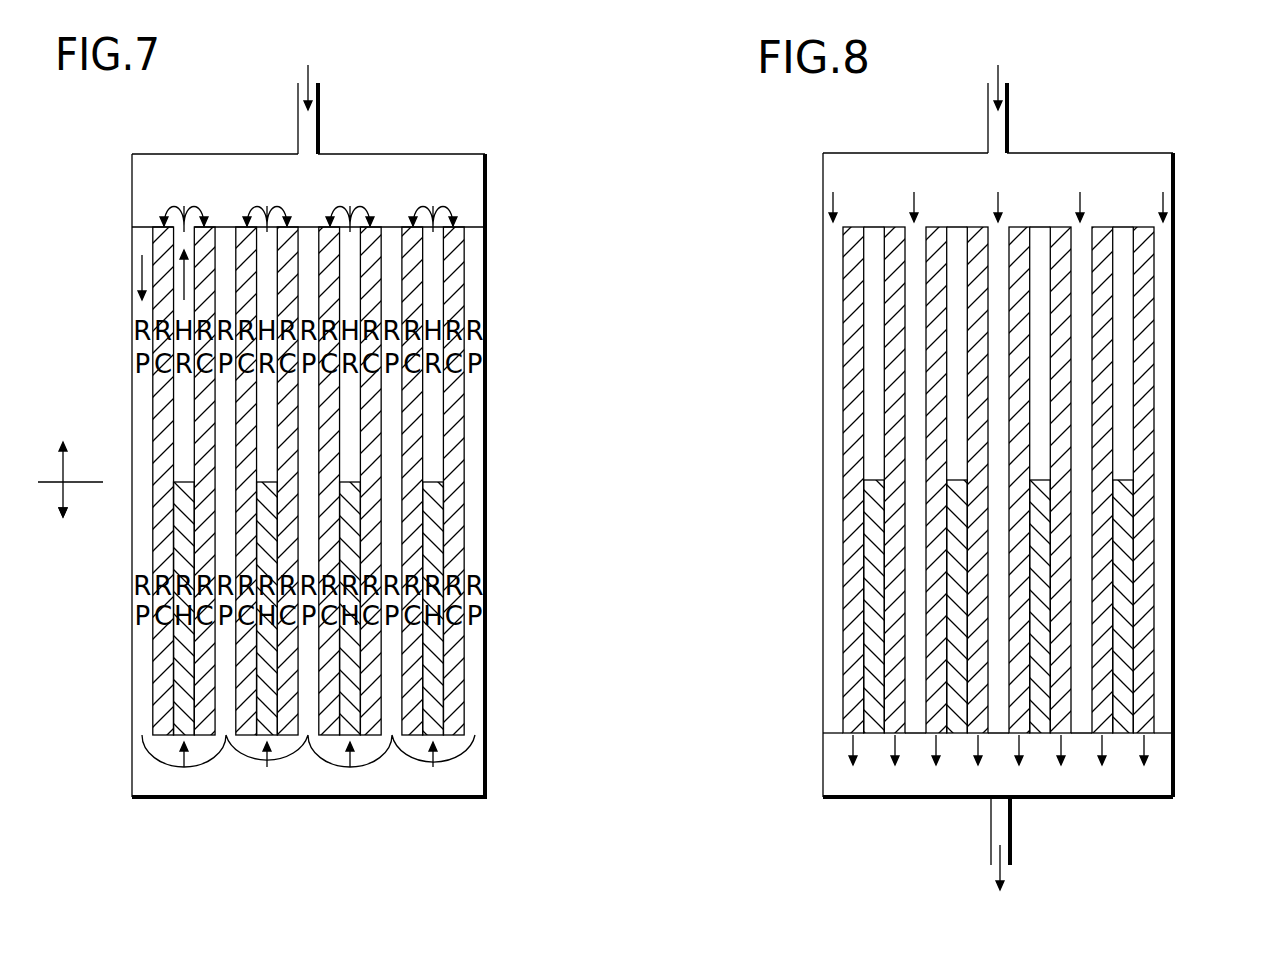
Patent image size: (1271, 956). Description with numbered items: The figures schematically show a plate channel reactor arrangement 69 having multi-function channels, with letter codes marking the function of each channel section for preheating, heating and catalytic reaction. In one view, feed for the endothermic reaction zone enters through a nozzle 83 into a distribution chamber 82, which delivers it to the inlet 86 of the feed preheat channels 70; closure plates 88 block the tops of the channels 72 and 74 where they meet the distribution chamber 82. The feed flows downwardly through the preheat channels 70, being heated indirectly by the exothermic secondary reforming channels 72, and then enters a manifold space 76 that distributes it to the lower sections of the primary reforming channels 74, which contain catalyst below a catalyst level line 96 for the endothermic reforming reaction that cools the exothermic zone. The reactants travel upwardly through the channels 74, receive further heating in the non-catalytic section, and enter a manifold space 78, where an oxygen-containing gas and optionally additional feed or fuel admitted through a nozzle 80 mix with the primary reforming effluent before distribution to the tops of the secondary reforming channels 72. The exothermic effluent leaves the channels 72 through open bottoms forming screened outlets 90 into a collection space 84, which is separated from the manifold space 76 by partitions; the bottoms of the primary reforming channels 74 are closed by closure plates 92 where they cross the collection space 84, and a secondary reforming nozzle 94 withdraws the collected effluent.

In FIG. 7, the reactor arrangement 69 is at (132, 538).
In FIG. 8, the reactor arrangement 69 is at (1175, 496).
In FIG. 7, the feed preheat channels 70 is at (474, 391).
In FIG. 8, the feed preheat channels 70 is at (823, 320).
In FIG. 7, the secondary reforming channels 72 is at (455, 428).
In FIG. 8, the secondary reforming channels 72 is at (870, 520).
In FIG. 7, the primary reforming channels 74 is at (436, 465).
In FIG. 8, the primary reforming channels 74 is at (875, 412).
In FIG. 7, the manifold space 76 is at (300, 780).
In FIG. 7, the manifold space 78 is at (390, 190).
In FIG. 7, the nozzle 80 is at (320, 127).
In FIG. 8, the distribution chamber 82 is at (1057, 190).
In FIG. 8, the nozzle 83 is at (1010, 105).
In FIG. 8, the collection space 84 is at (1088, 780).
In FIG. 8, the inlet 86 is at (835, 226).
In FIG. 8, the closure plates 88 is at (858, 228).
In FIG. 8, the outlets 90 is at (1153, 735).
In FIG. 8, the closure plates 92 is at (838, 735).
In FIG. 8, the secondary reforming nozzle 94 is at (1012, 846).
In FIG. 7, the catalyst level line 96 is at (103, 482).